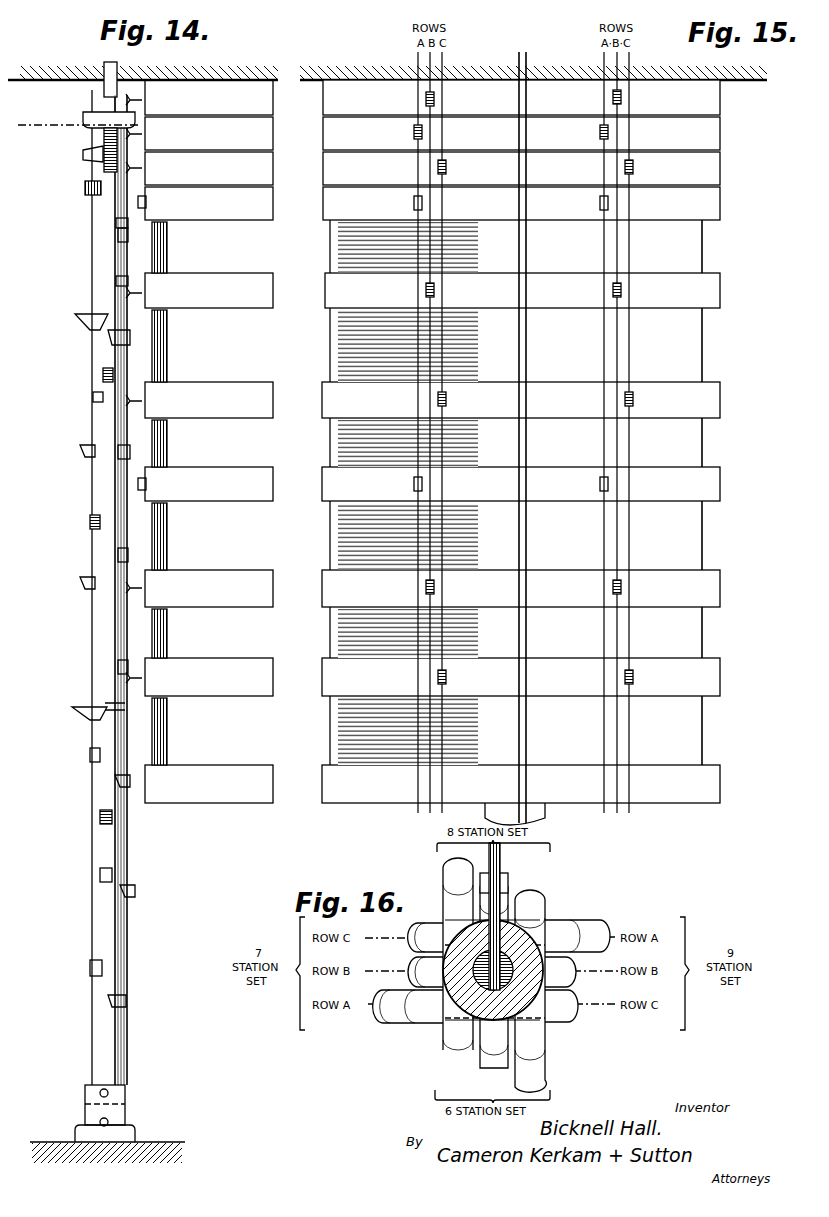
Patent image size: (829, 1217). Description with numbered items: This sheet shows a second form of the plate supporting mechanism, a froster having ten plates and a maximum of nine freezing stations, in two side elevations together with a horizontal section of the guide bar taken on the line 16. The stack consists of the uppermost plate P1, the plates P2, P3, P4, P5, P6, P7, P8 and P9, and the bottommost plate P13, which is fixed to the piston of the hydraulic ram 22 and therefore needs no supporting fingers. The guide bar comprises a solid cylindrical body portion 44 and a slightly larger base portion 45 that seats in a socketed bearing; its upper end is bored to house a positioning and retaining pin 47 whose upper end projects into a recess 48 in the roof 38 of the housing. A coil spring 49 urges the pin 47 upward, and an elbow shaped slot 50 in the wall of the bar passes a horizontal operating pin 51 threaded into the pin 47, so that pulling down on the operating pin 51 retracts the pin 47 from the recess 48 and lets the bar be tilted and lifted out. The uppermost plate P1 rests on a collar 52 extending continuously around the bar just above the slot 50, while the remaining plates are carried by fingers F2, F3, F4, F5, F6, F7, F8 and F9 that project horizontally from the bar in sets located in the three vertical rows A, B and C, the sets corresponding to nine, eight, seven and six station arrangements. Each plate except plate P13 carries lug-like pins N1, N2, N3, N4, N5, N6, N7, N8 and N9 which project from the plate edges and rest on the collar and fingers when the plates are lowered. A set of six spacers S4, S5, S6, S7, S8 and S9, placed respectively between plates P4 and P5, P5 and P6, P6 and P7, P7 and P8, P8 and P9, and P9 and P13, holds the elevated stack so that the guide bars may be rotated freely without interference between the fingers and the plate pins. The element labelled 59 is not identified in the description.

In FIG. 14, the section line 16 is at (28, 120).
In FIG. 15, the hydraulic ram 22 is at (540, 818).
In FIG. 15, the roof 38 is at (340, 80).
In FIG. 16, the cylindrical body portion 44 is at (538, 1005).
In FIG. 16, the base portion 45 is at (530, 915).
In FIG. 14, the positioning and retaining pin 47 is at (110, 88).
In FIG. 16, the positioning and retaining pin 47 is at (478, 970).
In FIG. 14, the recess 48 is at (122, 72).
In FIG. 14, the coil spring 49 is at (104, 170).
In FIG. 16, the elbow shaped slot 50 is at (525, 940).
In FIG. 16, the operating pin 51 is at (500, 855).
In FIG. 14, the collar 52 is at (86, 116).
In FIG. 16, the block 59 is at (505, 885).
In FIG. 14, the plate pin N1 is at (142, 100).
In FIG. 15, the plate pin N1 is at (434, 100).
In FIG. 14, the plate pin N2 is at (142, 134).
In FIG. 15, the plate pin N2 is at (422, 134).
In FIG. 14, the plate pin N3 is at (142, 168).
In FIG. 15, the plate pin N3 is at (446, 168).
In FIG. 14, the plate pin N4 is at (146, 202).
In FIG. 15, the plate pin N4 is at (422, 203).
In FIG. 14, the plate pin N5 is at (142, 293).
In FIG. 15, the plate pin N5 is at (434, 292).
In FIG. 14, the plate pin N6 is at (142, 401).
In FIG. 15, the plate pin N6 is at (446, 401).
In FIG. 14, the plate pin N7 is at (146, 485).
In FIG. 15, the plate pin N7 is at (422, 485).
In FIG. 14, the plate pin N8 is at (142, 588).
In FIG. 15, the plate pin N8 is at (434, 588).
In FIG. 14, the plate pin N9 is at (142, 678).
In FIG. 15, the plate pin N9 is at (446, 677).
In FIG. 15, the uppermost plate P1 is at (340, 106).
In FIG. 15, the froster plate P2 is at (345, 141).
In FIG. 15, the froster plate P3 is at (342, 175).
In FIG. 15, the froster plate P4 is at (345, 214).
In FIG. 15, the froster plate P5 is at (345, 300).
In FIG. 15, the froster plate P6 is at (342, 407).
In FIG. 15, the froster plate P7 is at (342, 493).
In FIG. 15, the froster plate P8 is at (342, 598).
In FIG. 15, the froster plate P9 is at (342, 686).
In FIG. 15, the bottommost plate P13 is at (342, 788).
In FIG. 14, the spacer member S4 is at (160, 258).
In FIG. 15, the spacer member S4 is at (350, 258).
In FIG. 14, the spacer member S5 is at (160, 362).
In FIG. 15, the spacer member S5 is at (350, 362).
In FIG. 14, the spacer member S6 is at (160, 458).
In FIG. 15, the spacer member S6 is at (350, 456).
In FIG. 14, the spacer member S7 is at (160, 541).
In FIG. 15, the spacer member S7 is at (350, 548).
In FIG. 14, the spacer member S8 is at (160, 646).
In FIG. 15, the spacer member S8 is at (350, 645).
In FIG. 14, the spacer member S9 is at (160, 744).
In FIG. 15, the spacer member S9 is at (350, 742).
In FIG. 14, the finger F2 is at (100, 155).
In FIG. 16, the finger F2 is at (535, 1030).
In FIG. 14, the finger F3 is at (85, 190).
In FIG. 16, the finger F3 is at (460, 1036).
In FIG. 14, the finger F4 is at (116, 222).
In FIG. 16, the finger F4 is at (528, 1066).
In FIG. 14, the finger F5 is at (103, 375).
In FIG. 16, the finger F5 is at (492, 1042).
In FIG. 14, the finger F6 is at (90, 520).
In FIG. 14, the finger F7 is at (118, 668).
In FIG. 14, the finger F8 is at (100, 870).
In FIG. 14, the finger F9 is at (105, 995).